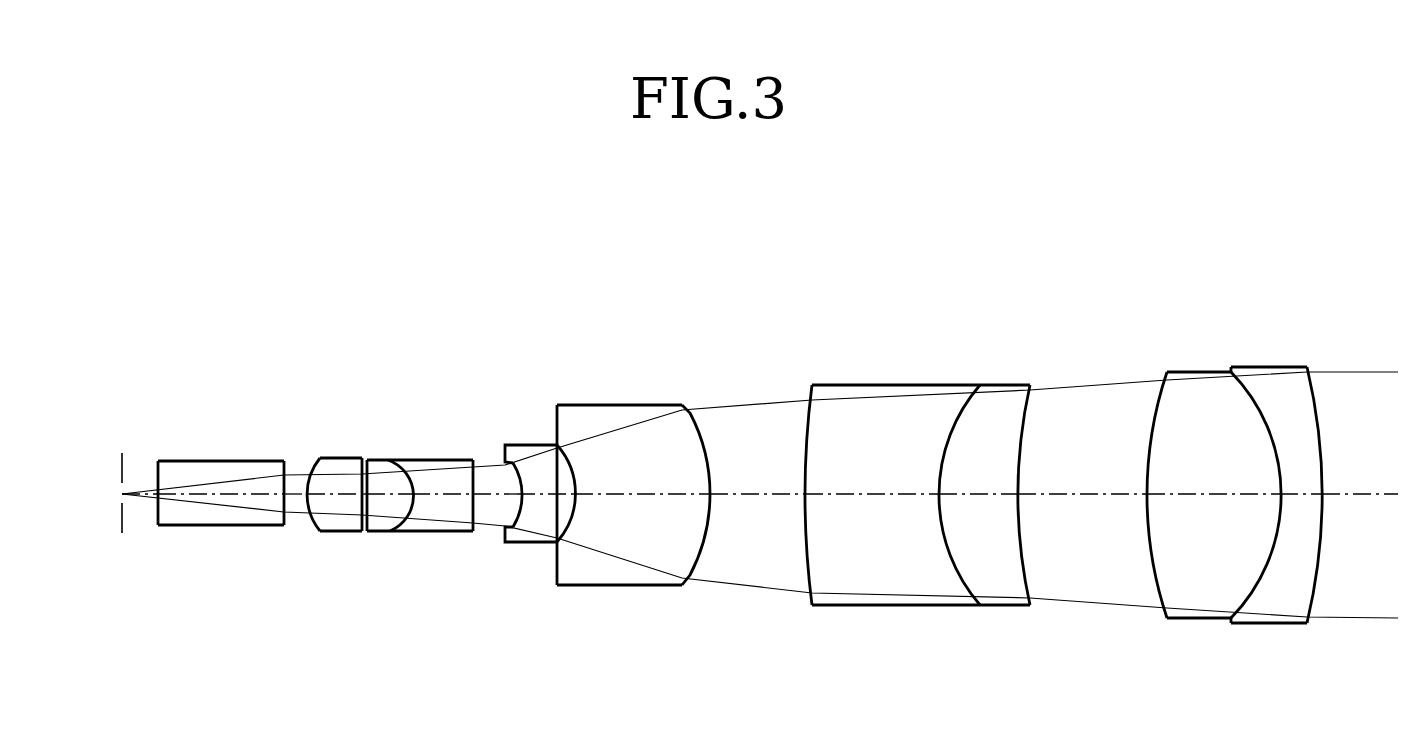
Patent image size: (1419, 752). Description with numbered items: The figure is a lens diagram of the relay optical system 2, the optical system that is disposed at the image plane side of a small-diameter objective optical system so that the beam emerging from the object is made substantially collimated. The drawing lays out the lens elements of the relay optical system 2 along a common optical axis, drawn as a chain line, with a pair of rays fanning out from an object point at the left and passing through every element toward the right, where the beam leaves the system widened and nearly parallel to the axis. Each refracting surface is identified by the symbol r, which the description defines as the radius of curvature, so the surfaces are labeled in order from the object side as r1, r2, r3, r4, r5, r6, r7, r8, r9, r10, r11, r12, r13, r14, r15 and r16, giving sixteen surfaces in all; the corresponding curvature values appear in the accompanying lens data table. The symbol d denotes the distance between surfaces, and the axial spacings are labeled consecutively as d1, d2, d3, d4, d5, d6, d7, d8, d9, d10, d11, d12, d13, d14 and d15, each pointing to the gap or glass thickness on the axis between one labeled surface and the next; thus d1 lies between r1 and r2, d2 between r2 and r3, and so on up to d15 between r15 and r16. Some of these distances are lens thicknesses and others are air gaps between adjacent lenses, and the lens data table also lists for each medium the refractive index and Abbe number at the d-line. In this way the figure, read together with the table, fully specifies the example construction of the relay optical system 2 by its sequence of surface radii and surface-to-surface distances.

The relay optical system 2 is at (1018, 203).
The radius of curvature of the first surface r1 is at (163, 512).
The radius of curvature of the second surface r2 is at (284, 516).
The radius of curvature of the third surface r3 is at (318, 525).
The radius of curvature of the fourth surface r4 is at (362, 522).
The radius of curvature of the fifth surface r5 is at (369, 525).
The radius of curvature of the sixth surface r6 is at (400, 522).
The radius of curvature of the seventh surface r7 is at (473, 525).
The radius of curvature of the eighth surface r8 is at (510, 515).
The radius of curvature of the ninth surface r9 is at (560, 520).
The radius of curvature of the tenth surface r10 is at (690, 560).
The radius of curvature of the eleventh surface r11 is at (805, 573).
The radius of curvature of the twelfth surface r12 is at (962, 578).
The radius of curvature of the thirteenth surface r13 is at (1025, 578).
The radius of curvature of the fourteenth surface r14 is at (1155, 580).
The radius of curvature of the fifteenth surface r15 is at (1242, 592).
The radius of curvature of the sixteenth surface r16 is at (1312, 598).
The distance between surfaces d1 is at (215, 493).
The distance between surfaces d2 is at (293, 493).
The distance between surfaces d3 is at (333, 493).
The distance between surfaces d4 is at (366, 493).
The distance between surfaces d5 is at (390, 493).
The distance between surfaces d6 is at (440, 493).
The distance between surfaces d7 is at (495, 493).
The distance between surfaces d8 is at (538, 493).
The distance between surfaces d9 is at (625, 493).
The distance between surfaces d10 is at (757, 493).
The distance between surfaces d11 is at (885, 493).
The distance between surfaces d12 is at (990, 493).
The distance between surfaces d13 is at (1095, 493).
The distance between surfaces d14 is at (1195, 493).
The distance between surfaces d15 is at (1295, 493).